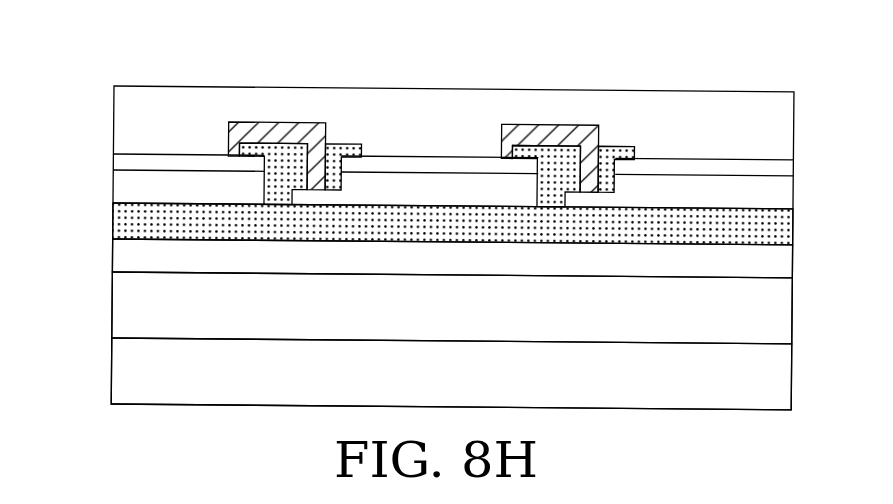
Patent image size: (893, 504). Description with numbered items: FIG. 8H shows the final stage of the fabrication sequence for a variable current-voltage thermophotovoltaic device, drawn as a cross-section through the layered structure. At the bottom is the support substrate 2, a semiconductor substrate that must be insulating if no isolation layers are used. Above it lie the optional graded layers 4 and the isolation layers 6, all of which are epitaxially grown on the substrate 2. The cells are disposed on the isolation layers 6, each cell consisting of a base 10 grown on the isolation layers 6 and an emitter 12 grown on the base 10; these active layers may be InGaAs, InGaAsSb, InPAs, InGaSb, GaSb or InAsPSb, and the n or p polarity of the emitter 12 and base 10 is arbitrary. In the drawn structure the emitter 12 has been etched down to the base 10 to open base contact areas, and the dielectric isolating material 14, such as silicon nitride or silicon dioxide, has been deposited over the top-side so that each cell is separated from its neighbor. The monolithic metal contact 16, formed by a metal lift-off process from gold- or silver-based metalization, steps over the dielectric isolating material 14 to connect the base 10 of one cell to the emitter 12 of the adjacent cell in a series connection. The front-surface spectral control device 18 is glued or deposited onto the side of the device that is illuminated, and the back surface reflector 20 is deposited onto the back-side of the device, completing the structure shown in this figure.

The support substrate 2 is at (123, 310).
The graded layers 4 is at (120, 257).
The isolation layers 6 is at (127, 220).
The base 10 is at (125, 188).
The emitter 12 is at (120, 162).
The dielectric isolating material 14 is at (343, 142).
The monolithic metal contact 16 is at (273, 118).
The front-surface spectral control device 18 is at (423, 108).
The back surface reflector 20 is at (137, 368).